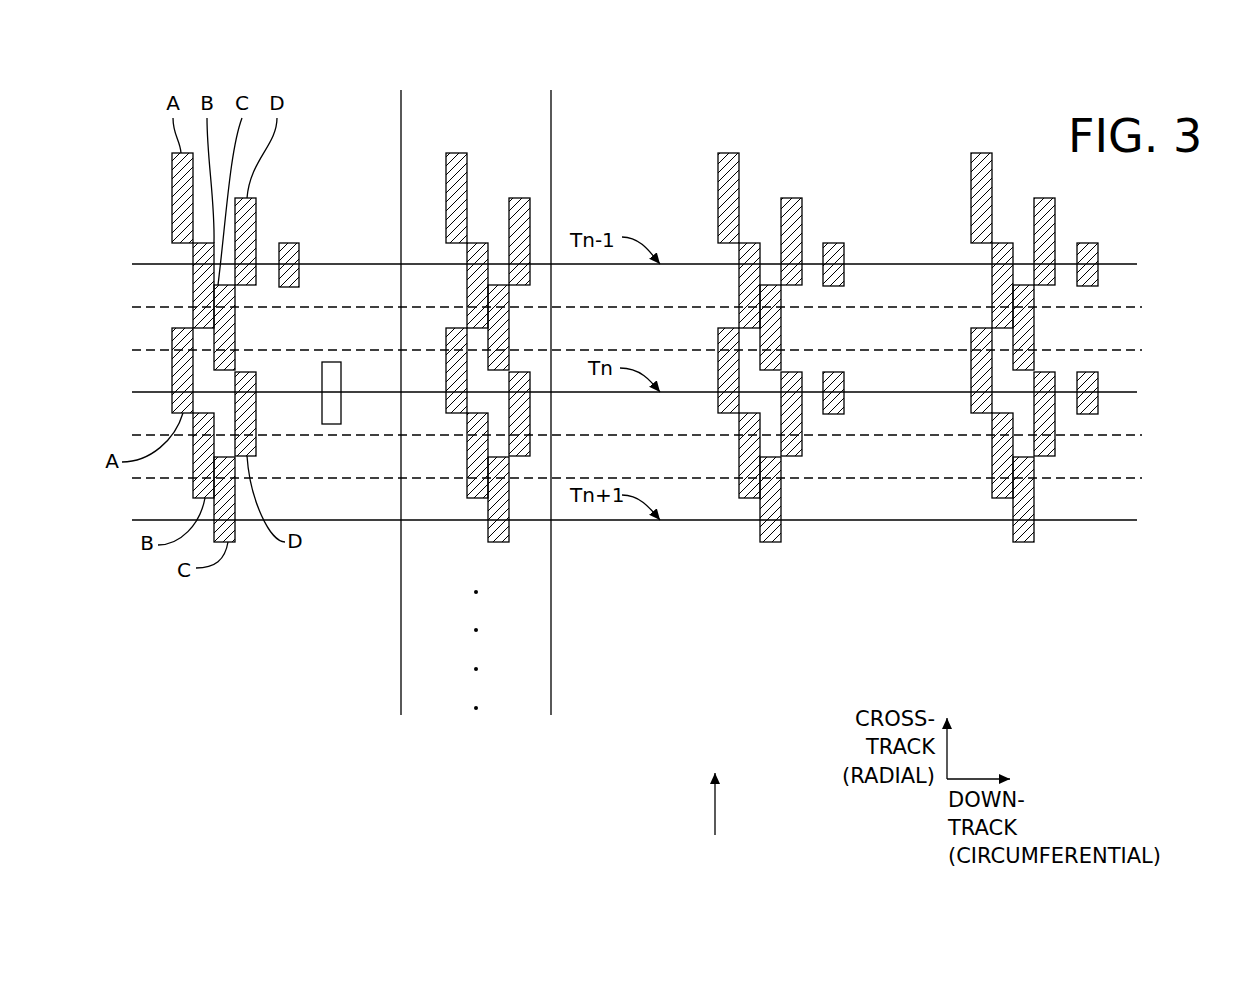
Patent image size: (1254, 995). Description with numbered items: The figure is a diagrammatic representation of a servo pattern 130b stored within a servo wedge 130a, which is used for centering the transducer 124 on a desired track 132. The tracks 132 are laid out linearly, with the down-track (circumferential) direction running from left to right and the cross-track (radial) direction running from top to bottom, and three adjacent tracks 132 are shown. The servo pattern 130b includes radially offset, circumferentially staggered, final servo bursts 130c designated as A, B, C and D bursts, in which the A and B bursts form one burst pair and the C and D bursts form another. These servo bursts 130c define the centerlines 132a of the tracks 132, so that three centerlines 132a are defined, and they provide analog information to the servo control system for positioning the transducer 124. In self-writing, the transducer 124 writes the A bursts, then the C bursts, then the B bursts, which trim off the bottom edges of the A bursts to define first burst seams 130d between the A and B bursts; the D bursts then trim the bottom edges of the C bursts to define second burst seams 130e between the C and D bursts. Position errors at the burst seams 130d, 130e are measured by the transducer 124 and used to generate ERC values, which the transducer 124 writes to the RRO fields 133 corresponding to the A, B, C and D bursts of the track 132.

The transducer 124 is at (341, 410).
The servo wedge 130a is at (380, 722).
The servo pattern 130b is at (302, 93).
The servo bursts 130c is at (444, 209).
The first burst seam 130d is at (190, 246).
The second burst seam 130e is at (238, 290).
The track 132 is at (716, 819).
The centerline 132a is at (1137, 264).
The RRO field 133 is at (300, 253).